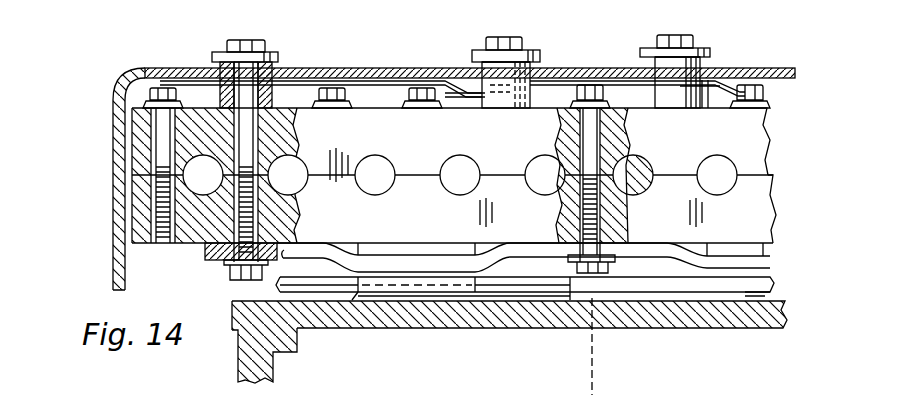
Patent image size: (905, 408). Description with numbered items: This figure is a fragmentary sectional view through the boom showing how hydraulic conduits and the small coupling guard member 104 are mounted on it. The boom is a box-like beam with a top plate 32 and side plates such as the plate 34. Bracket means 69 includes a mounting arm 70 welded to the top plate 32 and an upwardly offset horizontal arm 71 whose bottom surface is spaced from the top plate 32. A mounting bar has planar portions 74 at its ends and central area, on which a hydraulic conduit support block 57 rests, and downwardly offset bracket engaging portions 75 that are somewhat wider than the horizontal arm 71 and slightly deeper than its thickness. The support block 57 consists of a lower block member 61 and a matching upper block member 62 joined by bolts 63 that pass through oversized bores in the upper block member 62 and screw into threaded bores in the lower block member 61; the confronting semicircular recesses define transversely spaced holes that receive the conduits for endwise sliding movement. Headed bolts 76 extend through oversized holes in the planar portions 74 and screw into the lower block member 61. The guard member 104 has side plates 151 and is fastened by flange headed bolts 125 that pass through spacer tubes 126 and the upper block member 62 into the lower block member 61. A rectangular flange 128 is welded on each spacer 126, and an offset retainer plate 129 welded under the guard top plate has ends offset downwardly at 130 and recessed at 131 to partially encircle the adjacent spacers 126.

The side plate 151 is at (113, 195).
The small coupling guard member 104 is at (385, 70).
The offset retainer plate 129 is at (790, 72).
The upper block member 62 is at (765, 152).
The lower block member 61 is at (773, 188).
The bolts 63 is at (150, 92).
The rectangular flange 128 is at (216, 80).
The flange headed bolts 125 is at (256, 46).
The spacer tubes 126 is at (208, 82).
The downwardly offset ends 130 is at (300, 80).
The recess 131 is at (707, 108).
The hydraulic conduit support block 57 is at (768, 113).
The planar portions 74 is at (205, 250).
The bracket engaging portions 75 is at (425, 262).
The horizontal arm 71 is at (392, 225).
The headed bolts 76 is at (246, 278).
The mounting arm 70 is at (362, 300).
The bracket means 69 is at (432, 298).
The top plate 32 is at (690, 328).
The side plate 34 is at (275, 365).